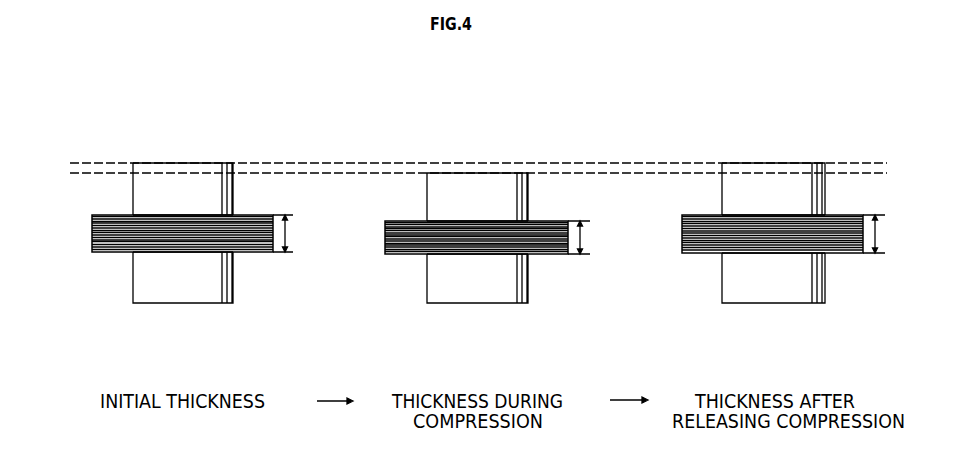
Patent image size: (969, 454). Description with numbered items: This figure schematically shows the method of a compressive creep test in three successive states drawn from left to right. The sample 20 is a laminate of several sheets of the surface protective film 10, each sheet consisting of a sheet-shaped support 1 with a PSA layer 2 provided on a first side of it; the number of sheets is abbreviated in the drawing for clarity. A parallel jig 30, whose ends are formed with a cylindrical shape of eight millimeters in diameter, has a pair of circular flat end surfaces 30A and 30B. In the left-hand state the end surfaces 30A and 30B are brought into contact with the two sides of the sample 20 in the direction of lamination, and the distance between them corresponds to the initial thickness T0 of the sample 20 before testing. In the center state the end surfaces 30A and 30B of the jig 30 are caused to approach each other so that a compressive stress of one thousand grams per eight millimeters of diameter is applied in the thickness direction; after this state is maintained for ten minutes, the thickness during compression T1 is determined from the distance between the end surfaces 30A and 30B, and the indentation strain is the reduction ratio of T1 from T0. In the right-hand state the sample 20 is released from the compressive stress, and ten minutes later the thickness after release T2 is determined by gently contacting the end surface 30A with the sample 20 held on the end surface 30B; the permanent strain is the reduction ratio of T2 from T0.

The surface protective film 10 is at (55, 258).
The support 1 is at (88, 253).
The PSA layer 2 is at (88, 245).
The sample 20 is at (89, 217).
The jig 30 is at (213, 303).
The end surface 30A is at (143, 224).
The end surface 30B is at (129, 248).
The thickness before testing T0 is at (294, 233).
The thickness during compression T1 is at (589, 237).
The thickness after release T2 is at (884, 234).